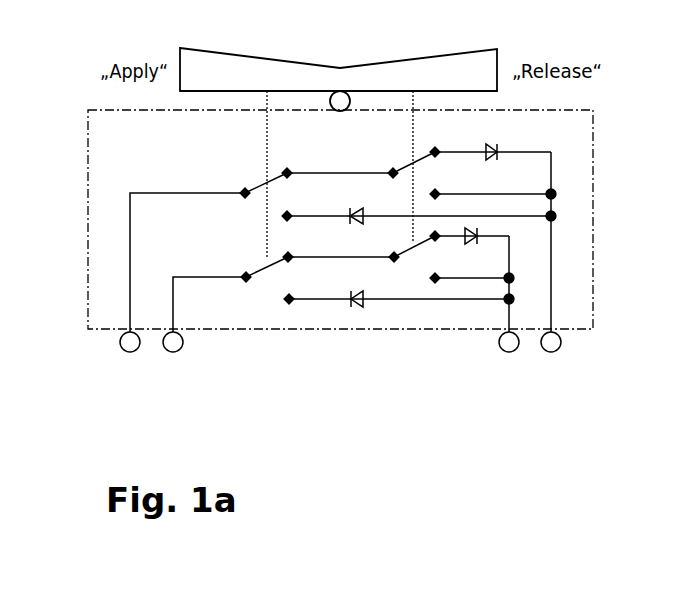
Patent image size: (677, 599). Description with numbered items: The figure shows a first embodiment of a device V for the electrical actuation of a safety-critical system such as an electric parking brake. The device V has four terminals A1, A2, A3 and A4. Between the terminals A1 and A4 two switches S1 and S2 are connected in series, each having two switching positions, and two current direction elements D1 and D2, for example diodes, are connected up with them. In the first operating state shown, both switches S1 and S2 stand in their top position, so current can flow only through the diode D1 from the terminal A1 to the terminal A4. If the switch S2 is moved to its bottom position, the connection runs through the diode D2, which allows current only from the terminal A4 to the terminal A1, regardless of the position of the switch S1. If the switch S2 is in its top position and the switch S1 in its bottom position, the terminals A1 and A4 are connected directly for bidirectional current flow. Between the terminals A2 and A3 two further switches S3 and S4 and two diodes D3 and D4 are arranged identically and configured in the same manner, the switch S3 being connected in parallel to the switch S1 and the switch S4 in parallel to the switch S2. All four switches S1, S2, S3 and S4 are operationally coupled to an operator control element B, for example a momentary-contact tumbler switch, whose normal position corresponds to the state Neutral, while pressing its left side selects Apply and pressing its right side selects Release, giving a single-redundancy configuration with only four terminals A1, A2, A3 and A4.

The operator control element B is at (338, 79).
The device V is at (340, 210).
The switch S1 is at (460, 171).
The switch S2 is at (307, 180).
The switch S3 is at (439, 255).
The switch S4 is at (308, 264).
The current direction element D1 is at (493, 140).
The current direction element D2 is at (416, 203).
The current direction element D3 is at (472, 251).
The current direction element D4 is at (396, 287).
The terminal A1 is at (181, 292).
The terminal A2 is at (202, 334).
The terminal A3 is at (509, 313).
The terminal A4 is at (556, 271).